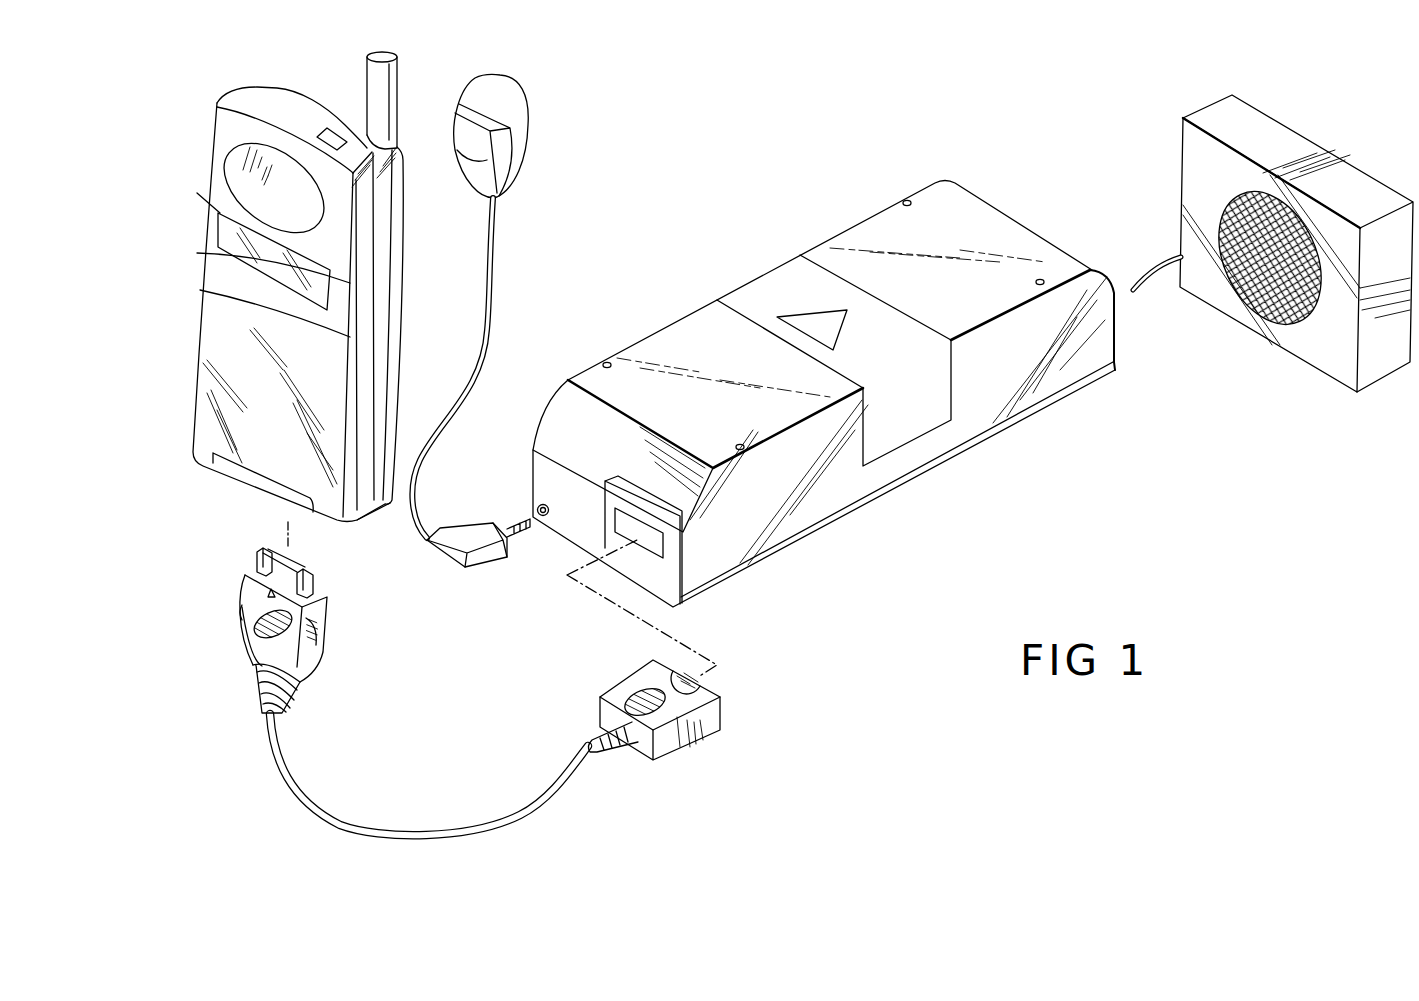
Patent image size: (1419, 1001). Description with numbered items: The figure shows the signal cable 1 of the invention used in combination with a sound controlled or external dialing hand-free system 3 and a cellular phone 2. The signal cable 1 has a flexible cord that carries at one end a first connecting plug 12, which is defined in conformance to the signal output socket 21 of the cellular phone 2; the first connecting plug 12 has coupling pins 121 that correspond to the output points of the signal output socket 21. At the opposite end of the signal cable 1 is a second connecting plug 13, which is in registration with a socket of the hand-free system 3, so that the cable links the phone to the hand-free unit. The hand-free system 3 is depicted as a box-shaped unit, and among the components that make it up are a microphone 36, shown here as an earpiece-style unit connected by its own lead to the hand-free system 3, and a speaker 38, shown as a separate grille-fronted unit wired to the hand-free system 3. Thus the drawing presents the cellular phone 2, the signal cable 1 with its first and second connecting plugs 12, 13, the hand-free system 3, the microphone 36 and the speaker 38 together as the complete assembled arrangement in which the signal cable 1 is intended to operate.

The signal cable 1 is at (398, 779).
The cellular phone 2 is at (180, 290).
The hand-free system 3 is at (937, 490).
The first connecting plug 12 is at (336, 656).
The second connecting plug 13 is at (707, 748).
The signal output socket 21 is at (237, 500).
The microphone 36 is at (540, 160).
The speaker 38 is at (1273, 362).
The coupling pins 121 is at (302, 560).